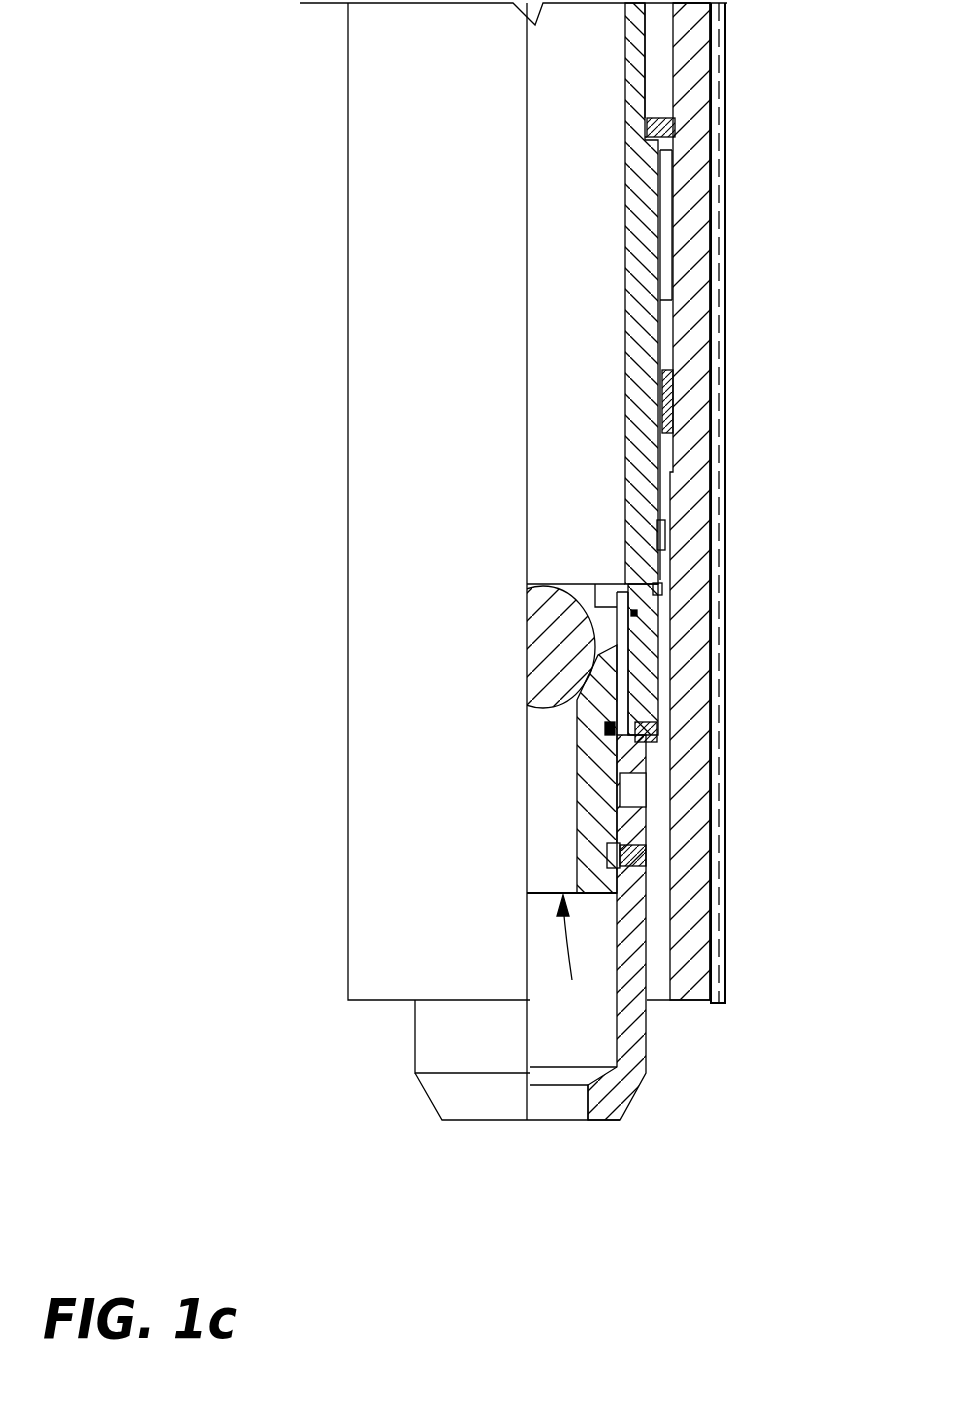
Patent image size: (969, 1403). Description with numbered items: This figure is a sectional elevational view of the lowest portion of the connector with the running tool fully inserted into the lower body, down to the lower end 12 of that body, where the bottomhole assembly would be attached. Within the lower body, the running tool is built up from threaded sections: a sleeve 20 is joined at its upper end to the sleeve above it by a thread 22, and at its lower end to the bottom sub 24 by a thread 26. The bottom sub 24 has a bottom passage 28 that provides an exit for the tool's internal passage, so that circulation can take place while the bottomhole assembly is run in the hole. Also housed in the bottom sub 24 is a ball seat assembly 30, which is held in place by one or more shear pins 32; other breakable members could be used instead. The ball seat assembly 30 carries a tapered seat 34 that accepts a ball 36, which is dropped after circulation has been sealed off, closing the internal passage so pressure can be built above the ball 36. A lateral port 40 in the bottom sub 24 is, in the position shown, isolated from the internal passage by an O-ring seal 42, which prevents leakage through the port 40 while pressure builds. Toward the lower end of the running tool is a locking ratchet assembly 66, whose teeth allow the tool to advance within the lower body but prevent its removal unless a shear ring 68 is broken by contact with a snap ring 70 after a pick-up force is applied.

The lower end 12 is at (378, 1003).
The sleeve 20 is at (660, 176).
The thread 22 is at (648, 69).
The bottom sub 24 is at (640, 1063).
The thread 26 is at (640, 663).
The bottom passage 28 is at (570, 1113).
The ball seat assembly 30 is at (574, 956).
The shear pin 32 is at (607, 855).
The tapered seat 34 is at (588, 667).
The ball 36 is at (553, 600).
The lateral port 40 is at (632, 800).
The O-ring seal 42 is at (615, 728).
The locking ratchet assembly 66 is at (673, 372).
The shear ring 68 is at (662, 536).
The snap ring 70 is at (660, 590).